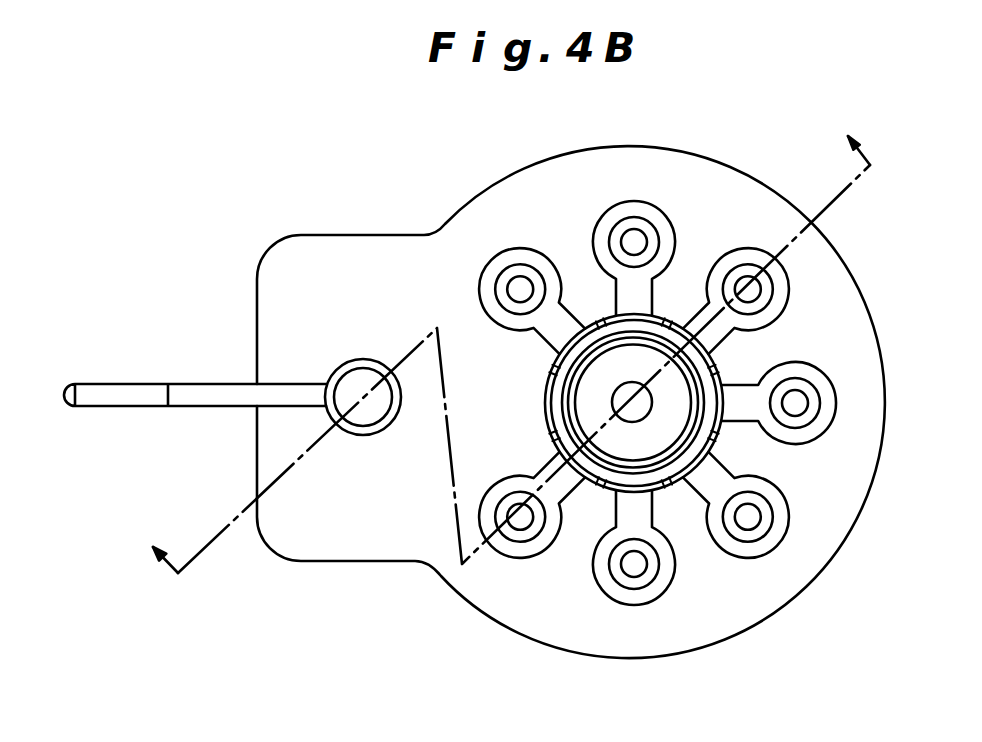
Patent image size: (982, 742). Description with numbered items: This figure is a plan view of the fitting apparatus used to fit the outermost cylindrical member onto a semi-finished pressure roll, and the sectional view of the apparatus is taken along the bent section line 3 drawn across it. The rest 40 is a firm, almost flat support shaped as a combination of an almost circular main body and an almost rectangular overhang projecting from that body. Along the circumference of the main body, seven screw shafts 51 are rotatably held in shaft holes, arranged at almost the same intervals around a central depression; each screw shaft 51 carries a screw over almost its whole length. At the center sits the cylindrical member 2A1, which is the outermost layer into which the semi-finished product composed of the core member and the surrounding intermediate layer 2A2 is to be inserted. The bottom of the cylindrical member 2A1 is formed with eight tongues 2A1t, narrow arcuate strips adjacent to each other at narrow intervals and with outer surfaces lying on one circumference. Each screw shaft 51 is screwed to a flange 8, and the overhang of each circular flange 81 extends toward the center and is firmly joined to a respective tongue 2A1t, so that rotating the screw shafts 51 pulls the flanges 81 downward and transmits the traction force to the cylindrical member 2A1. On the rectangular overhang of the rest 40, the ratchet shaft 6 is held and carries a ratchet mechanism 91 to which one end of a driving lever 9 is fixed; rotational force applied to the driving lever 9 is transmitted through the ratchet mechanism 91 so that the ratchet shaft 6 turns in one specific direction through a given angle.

The rest 40 is at (522, 168).
The driving lever 9 is at (122, 382).
The ratchet mechanism 91 is at (342, 365).
The ratchet shaft 6 is at (368, 405).
The section line 3- 3 is at (515, 360).
The cylindrical member 2A1 is at (586, 491).
The tongues 2A1t is at (689, 317).
The intermediate layer 2A2 is at (679, 489).
The flange 8 is at (491, 313).
The flange 81 is at (802, 443).
The screw shaft 51 is at (522, 285).